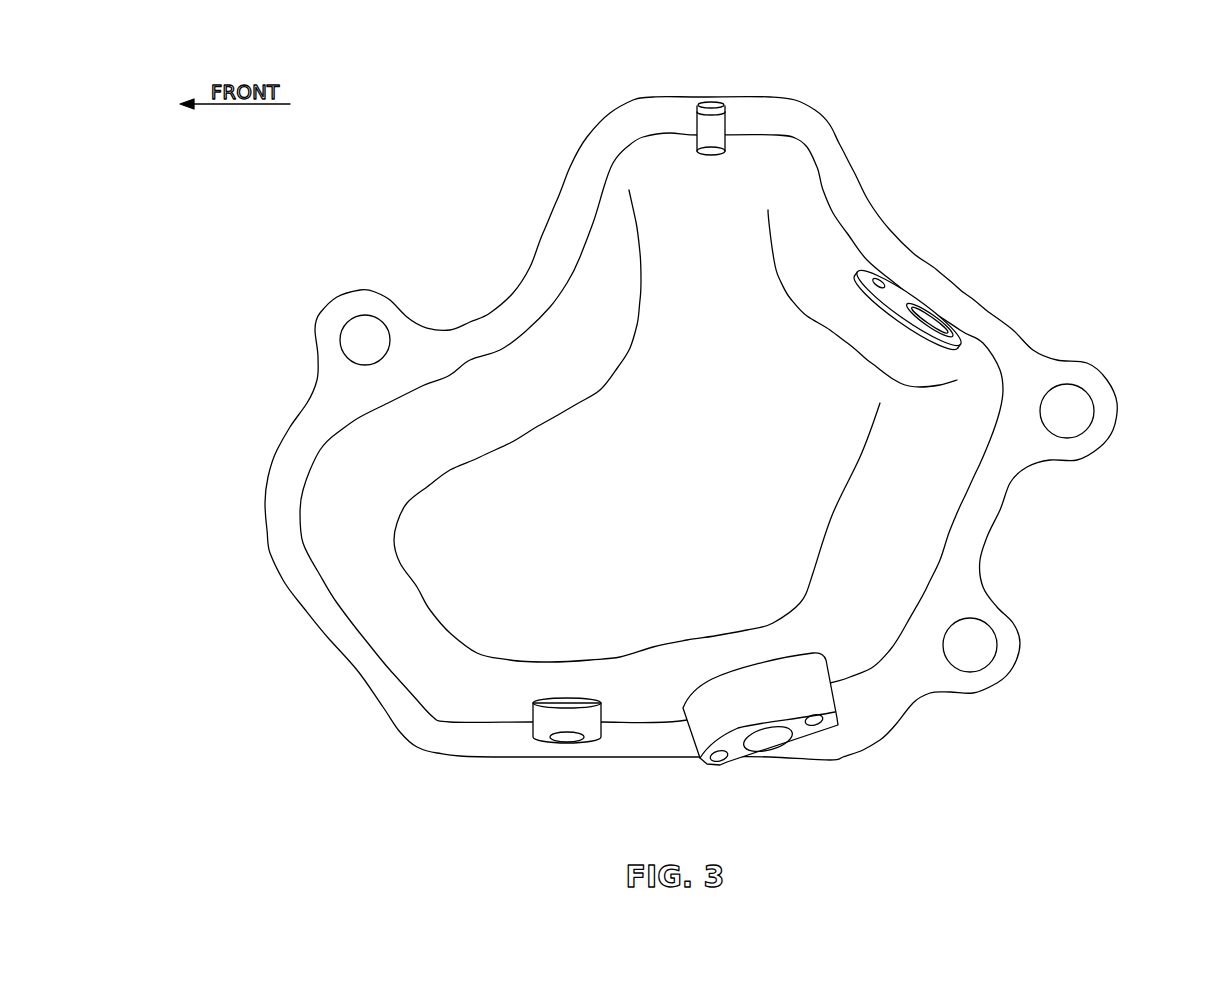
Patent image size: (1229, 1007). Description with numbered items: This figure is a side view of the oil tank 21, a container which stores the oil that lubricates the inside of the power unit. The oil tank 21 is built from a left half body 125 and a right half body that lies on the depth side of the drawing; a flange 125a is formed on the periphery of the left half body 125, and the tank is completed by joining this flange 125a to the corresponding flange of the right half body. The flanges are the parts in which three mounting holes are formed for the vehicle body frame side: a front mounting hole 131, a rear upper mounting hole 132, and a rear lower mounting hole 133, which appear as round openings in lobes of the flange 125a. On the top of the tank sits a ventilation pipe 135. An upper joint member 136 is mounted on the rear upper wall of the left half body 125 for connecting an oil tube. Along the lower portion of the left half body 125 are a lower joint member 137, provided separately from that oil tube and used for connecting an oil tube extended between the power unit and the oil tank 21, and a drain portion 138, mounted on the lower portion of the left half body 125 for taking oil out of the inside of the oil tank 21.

The oil tank 21 is at (672, 426).
The left half body 125 is at (635, 428).
The flange 125a is at (280, 478).
The front mounting hole 131 is at (338, 337).
The rear upper mounting hole 132 is at (1093, 420).
The rear lower mounting hole 133 is at (990, 660).
The ventilation pipe 135 is at (717, 127).
The upper joint member 136 is at (897, 293).
The lower joint member 137 is at (737, 750).
The drain portion 138 is at (537, 727).